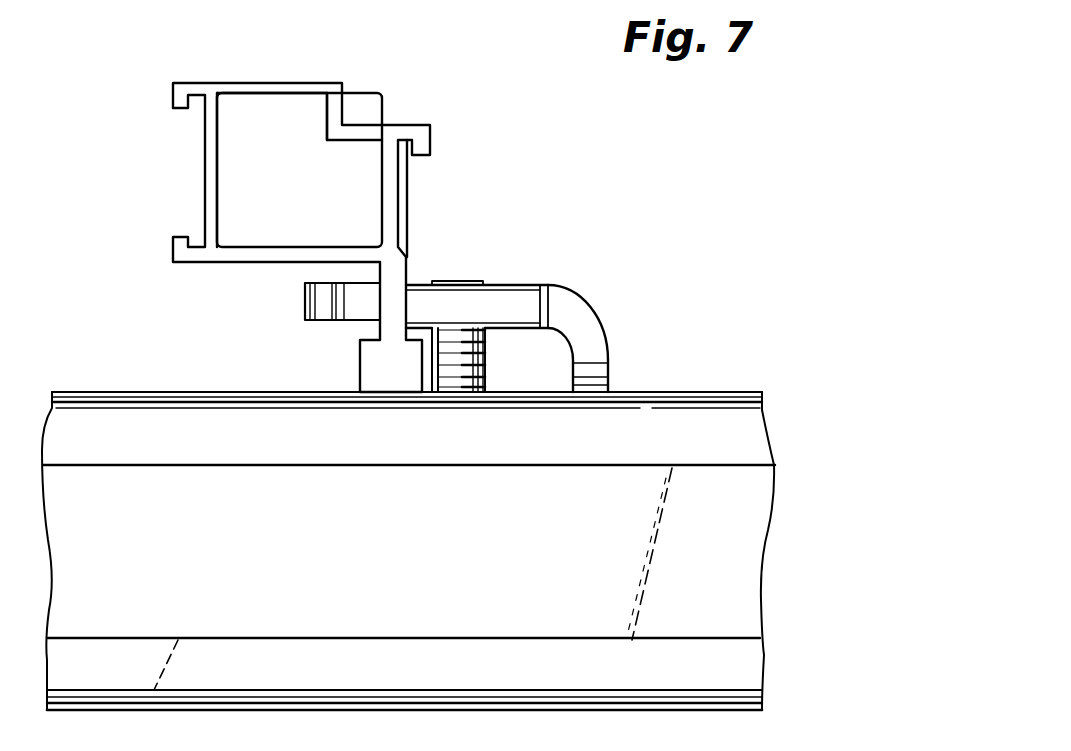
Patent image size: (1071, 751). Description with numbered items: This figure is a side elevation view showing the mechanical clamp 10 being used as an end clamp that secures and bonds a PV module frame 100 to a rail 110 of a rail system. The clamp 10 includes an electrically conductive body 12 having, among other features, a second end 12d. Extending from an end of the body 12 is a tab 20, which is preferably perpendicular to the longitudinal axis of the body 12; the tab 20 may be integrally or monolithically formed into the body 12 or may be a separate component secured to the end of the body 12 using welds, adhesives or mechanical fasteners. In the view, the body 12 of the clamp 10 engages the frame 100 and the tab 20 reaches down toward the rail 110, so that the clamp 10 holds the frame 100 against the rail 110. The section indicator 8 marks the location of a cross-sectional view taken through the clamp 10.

The PV module frame 100 is at (236, 78).
The rail 110 is at (91, 385).
The mechanical clamp 10 is at (602, 248).
The electrically conductive body 12 is at (515, 279).
The second end 12d is at (305, 297).
The tab 20 is at (617, 354).
The section line 8- 8 is at (422, 230).